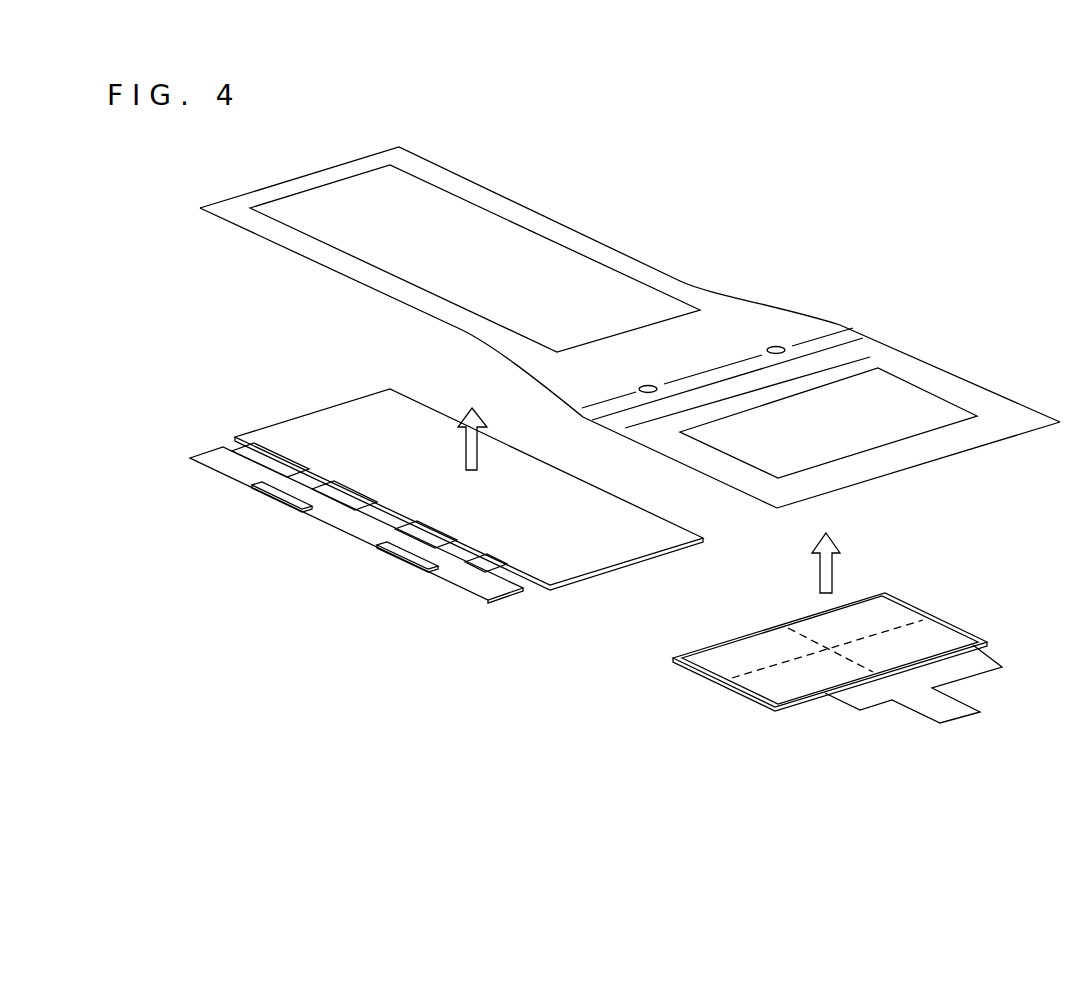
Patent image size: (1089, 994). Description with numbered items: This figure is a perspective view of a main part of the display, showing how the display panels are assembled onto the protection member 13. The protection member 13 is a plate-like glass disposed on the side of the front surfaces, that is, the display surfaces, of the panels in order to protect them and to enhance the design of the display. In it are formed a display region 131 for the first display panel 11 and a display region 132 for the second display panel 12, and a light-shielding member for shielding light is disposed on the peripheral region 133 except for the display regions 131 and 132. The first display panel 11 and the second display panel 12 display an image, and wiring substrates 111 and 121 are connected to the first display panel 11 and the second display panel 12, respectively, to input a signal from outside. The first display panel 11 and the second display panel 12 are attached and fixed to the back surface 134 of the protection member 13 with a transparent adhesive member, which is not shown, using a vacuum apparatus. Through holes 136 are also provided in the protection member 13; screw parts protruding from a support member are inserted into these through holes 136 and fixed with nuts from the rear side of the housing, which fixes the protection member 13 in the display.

The first display panel 11 is at (296, 436).
The wiring substrate 111 is at (240, 472).
The second display panel 12 is at (900, 622).
The wiring substrate 121 is at (943, 717).
The protection member 13 is at (478, 188).
The display region 131 is at (342, 200).
The display region 132 is at (915, 410).
The peripheral region 133 is at (556, 215).
The back surface 134 is at (357, 283).
The through hole 136 is at (781, 343).